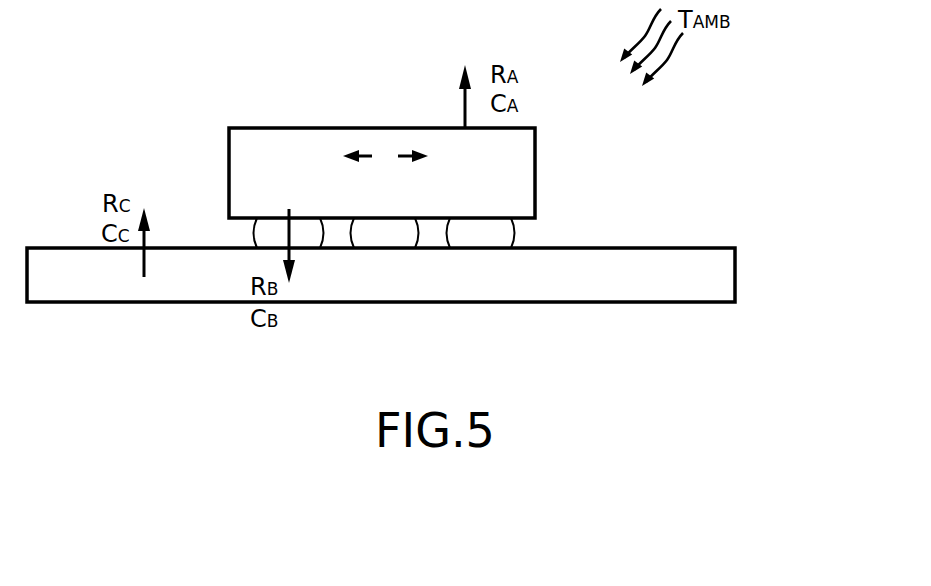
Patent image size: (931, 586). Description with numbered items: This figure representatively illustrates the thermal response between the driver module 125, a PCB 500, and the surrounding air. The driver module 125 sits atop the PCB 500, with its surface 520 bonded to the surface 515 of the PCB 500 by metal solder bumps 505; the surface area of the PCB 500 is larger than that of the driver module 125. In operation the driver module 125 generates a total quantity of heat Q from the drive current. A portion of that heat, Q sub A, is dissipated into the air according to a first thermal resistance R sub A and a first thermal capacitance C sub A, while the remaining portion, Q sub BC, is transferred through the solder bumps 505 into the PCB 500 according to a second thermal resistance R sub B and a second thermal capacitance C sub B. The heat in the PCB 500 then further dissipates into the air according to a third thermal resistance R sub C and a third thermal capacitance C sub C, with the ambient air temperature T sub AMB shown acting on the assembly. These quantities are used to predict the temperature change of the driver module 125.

The driver module 125 is at (533, 157).
The metal solder bumps 505 is at (520, 238).
The surface of the driver module 520 is at (240, 228).
The PCB 500 is at (736, 273).
The surface of the PCB 515 is at (658, 234).